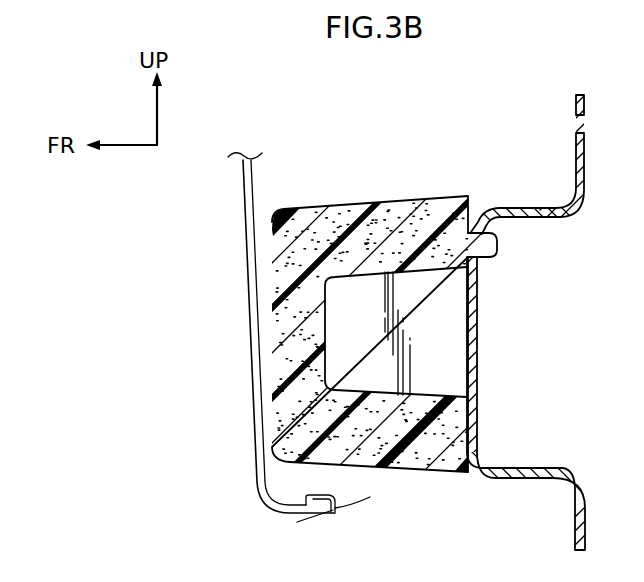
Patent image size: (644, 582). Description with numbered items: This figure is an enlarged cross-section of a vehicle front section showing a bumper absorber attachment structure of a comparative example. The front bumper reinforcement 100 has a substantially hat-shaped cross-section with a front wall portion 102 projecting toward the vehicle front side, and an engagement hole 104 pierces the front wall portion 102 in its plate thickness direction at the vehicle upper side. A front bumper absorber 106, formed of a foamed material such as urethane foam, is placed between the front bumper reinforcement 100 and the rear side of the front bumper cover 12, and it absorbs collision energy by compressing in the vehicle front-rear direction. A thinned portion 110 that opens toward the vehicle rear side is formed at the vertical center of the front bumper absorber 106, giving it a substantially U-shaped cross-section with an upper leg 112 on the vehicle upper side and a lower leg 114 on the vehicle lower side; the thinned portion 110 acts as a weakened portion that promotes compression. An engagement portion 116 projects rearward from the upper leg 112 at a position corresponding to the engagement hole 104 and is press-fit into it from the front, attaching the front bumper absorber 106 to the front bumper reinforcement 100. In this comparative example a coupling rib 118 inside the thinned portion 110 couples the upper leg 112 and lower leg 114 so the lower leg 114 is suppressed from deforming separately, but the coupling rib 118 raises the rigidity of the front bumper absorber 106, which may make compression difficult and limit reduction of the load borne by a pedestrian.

The front bumper cover 12 is at (246, 203).
The front bumper reinforcement 100 is at (533, 208).
The front wall portion 102 is at (472, 378).
The engagement hole 104 is at (480, 258).
The front bumper absorber 106 is at (315, 208).
The thinned portion 110 is at (428, 340).
The upper leg 112 is at (419, 214).
The lower leg 114 is at (416, 455).
The engagement portion 116 is at (497, 244).
The coupling rib 118 is at (438, 300).